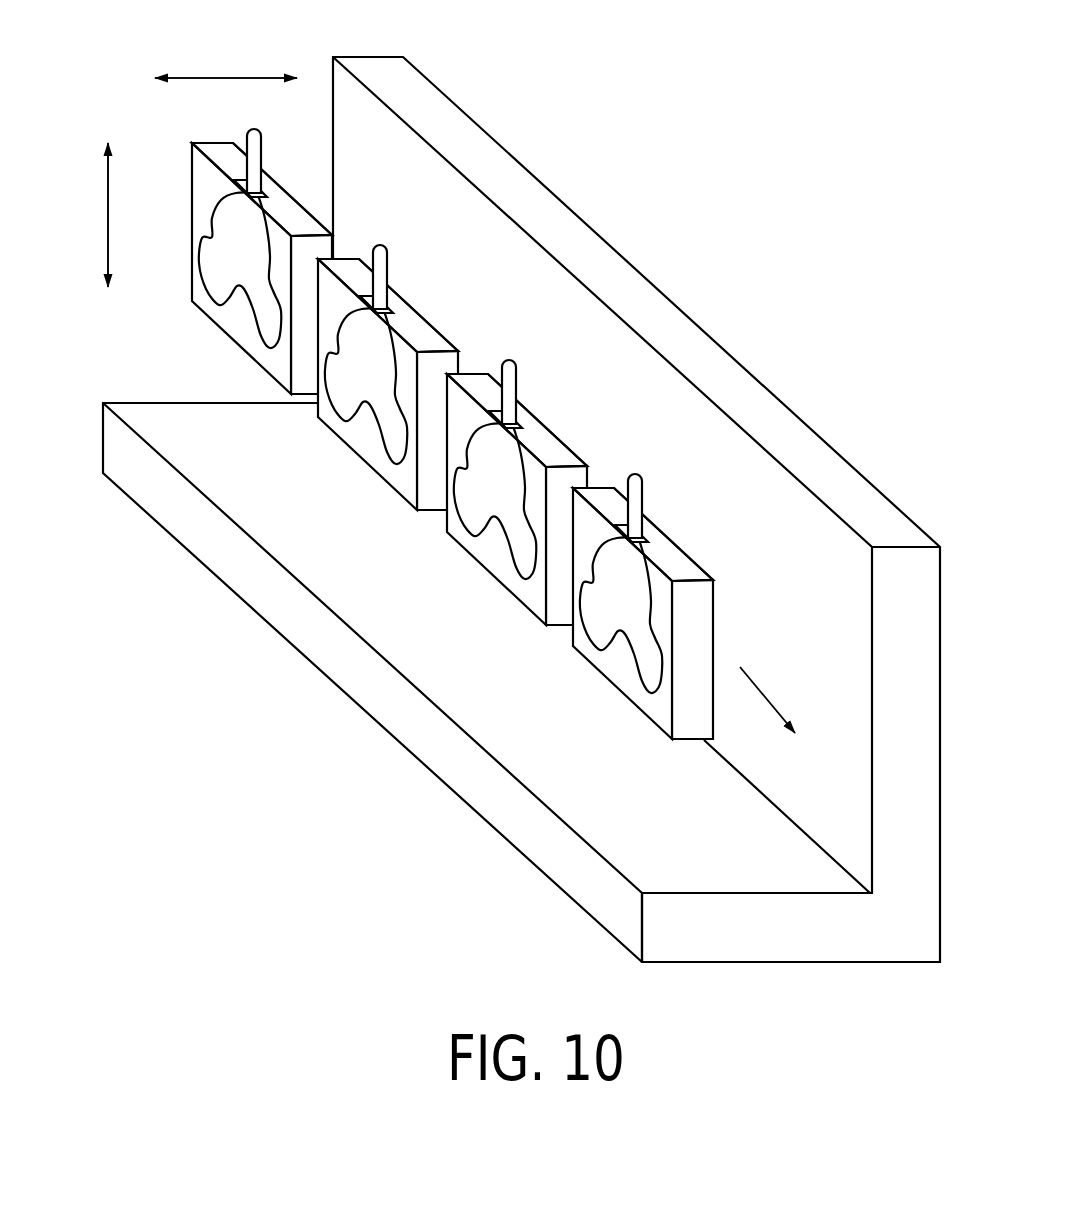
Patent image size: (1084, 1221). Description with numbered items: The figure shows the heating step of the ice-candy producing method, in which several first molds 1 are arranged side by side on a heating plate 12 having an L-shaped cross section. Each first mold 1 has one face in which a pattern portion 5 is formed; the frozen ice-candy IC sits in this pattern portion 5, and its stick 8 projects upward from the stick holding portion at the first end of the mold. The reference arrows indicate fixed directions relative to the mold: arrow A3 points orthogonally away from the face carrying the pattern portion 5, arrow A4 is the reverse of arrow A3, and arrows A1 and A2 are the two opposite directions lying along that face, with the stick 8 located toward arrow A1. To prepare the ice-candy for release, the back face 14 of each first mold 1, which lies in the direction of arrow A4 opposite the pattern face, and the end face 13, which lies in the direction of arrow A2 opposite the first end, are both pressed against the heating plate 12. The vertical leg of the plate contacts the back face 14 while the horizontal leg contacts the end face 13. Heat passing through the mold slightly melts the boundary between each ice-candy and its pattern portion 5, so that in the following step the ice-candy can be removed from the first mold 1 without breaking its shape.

The first mold 1 is at (240, 321).
The pattern portion 5 is at (222, 285).
The stick 8 is at (262, 137).
The heating plate 12 is at (593, 251).
The end face 13 is at (233, 362).
The back face 14 is at (306, 188).
The arrow A1 is at (87, 211).
The arrow A2 is at (87, 218).
The arrow A3 is at (223, 59).
The arrow A4 is at (234, 59).